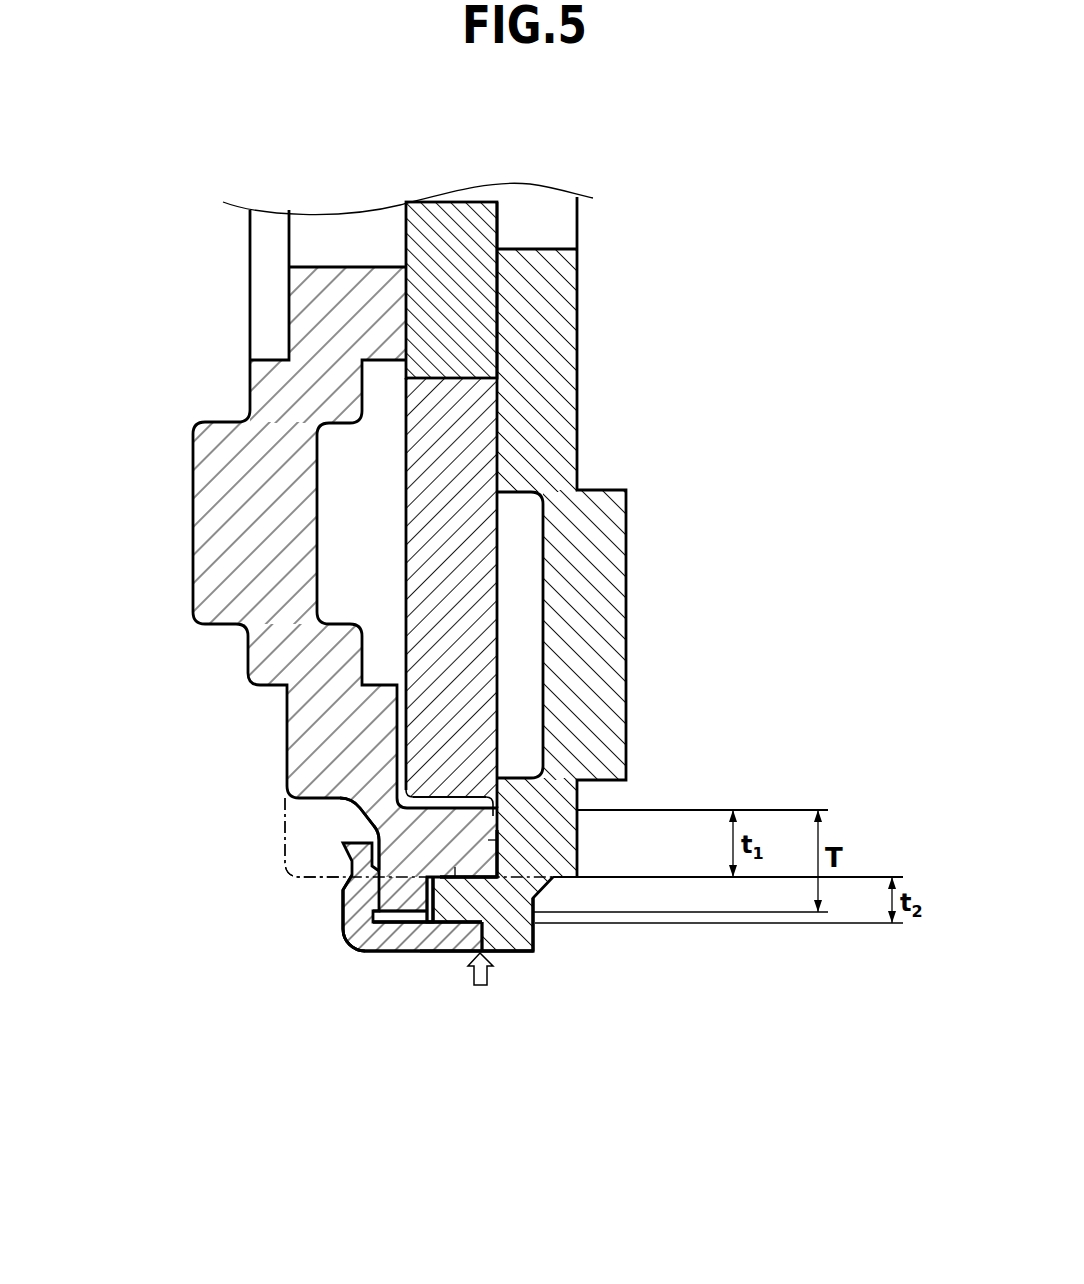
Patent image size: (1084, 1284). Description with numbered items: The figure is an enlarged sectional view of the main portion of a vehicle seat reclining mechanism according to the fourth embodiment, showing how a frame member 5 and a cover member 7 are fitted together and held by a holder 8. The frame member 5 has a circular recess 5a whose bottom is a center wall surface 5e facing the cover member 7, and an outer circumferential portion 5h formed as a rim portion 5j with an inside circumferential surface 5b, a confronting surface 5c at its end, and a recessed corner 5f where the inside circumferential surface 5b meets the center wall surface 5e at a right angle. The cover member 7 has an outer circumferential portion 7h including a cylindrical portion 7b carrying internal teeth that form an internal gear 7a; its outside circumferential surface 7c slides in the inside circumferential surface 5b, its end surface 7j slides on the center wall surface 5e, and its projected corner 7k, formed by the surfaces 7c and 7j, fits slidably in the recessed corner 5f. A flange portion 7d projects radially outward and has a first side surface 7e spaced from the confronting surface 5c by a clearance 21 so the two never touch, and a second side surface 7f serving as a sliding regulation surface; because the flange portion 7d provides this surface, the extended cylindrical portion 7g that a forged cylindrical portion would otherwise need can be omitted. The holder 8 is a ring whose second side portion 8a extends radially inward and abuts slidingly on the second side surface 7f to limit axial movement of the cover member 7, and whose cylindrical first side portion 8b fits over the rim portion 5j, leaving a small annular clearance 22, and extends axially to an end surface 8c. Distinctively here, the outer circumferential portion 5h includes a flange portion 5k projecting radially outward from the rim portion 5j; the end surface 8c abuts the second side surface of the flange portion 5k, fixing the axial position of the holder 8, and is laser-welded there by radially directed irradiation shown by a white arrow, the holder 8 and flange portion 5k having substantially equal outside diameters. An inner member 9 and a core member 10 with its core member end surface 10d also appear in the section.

The frame member 5 is at (557, 337).
The circular recess 5a is at (495, 442).
The inside circumferential surface 5b is at (455, 867).
The confronting surface 5c is at (415, 900).
The center wall surface 5e is at (488, 840).
The recessed corner 5f is at (165, 762).
The outer circumferential portion 5h is at (600, 1058).
The rim portion 5j is at (508, 953).
The flange portion 5k is at (525, 951).
The cover member 7 is at (322, 334).
The internal gear 7a is at (445, 790).
The cylindrical portion 7b is at (415, 924).
The outside circumferential surface 7c is at (484, 880).
The flange portion 7d is at (345, 922).
The first side surface 7e is at (370, 887).
The second side surface 7f is at (344, 893).
The extended cylindrical portion 7g is at (284, 858).
The outer circumferential portion 7h is at (330, 1160).
The end surface 7j is at (494, 845).
The projected corner 7k is at (688, 938).
The holder 8 is at (372, 938).
The second side portion 8a is at (343, 902).
The first side portion 8b is at (470, 940).
The end surface 8c is at (486, 940).
The inner member 9 is at (473, 241).
The core member 10 is at (478, 535).
The core member end surface 10d is at (445, 790).
The clearance 21 is at (462, 880).
The annular clearance 22 is at (440, 887).